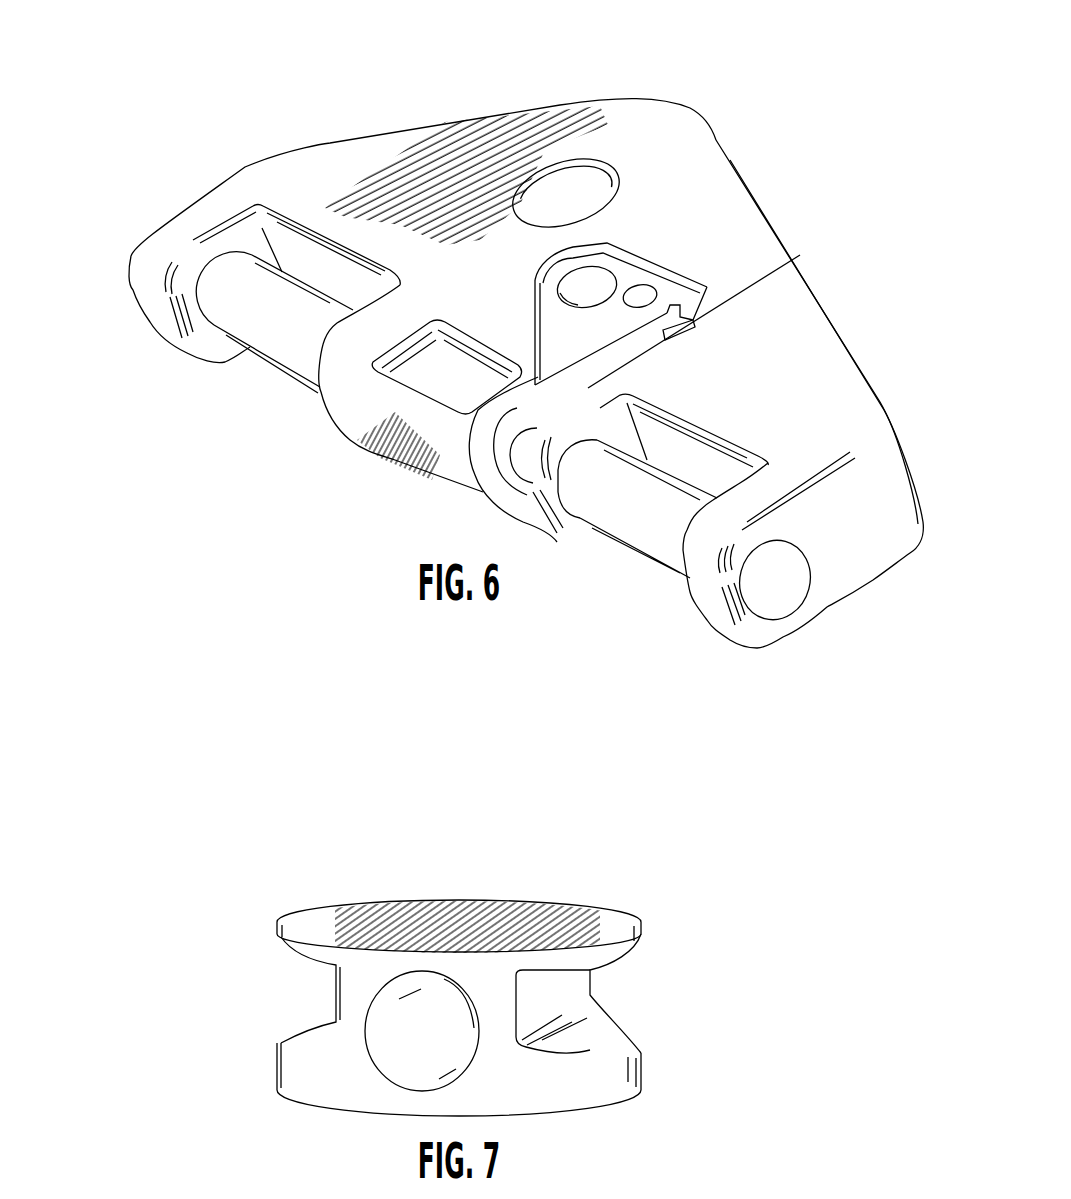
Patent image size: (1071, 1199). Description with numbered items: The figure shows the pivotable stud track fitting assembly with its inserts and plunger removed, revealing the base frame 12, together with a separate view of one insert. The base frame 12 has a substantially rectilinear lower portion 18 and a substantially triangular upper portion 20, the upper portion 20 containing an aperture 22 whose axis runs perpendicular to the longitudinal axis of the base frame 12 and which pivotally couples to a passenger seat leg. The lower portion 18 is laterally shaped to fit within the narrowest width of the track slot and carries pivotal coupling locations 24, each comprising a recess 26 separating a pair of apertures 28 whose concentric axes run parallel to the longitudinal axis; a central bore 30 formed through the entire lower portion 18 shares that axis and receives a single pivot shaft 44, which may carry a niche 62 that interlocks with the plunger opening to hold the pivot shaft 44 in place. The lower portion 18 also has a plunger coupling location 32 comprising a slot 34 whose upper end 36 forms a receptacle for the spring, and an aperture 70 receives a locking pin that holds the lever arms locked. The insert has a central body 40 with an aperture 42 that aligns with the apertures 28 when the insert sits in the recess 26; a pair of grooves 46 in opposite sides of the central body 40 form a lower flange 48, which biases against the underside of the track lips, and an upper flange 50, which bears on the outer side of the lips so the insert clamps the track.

In FIG. 6, the base frame 12 is at (350, 140).
In FIG. 7, the base frame 12 is at (325, 917).
In FIG. 6, the lower portion 18 is at (225, 190).
In FIG. 6, the upper portion 20 is at (765, 250).
In FIG. 6, the aperture 22 is at (577, 160).
In FIG. 6, the pivotal coupling location 24 is at (310, 247).
In FIG. 6, the recess 26 is at (335, 275).
In FIG. 6, the apertures 28 is at (205, 277).
In FIG. 6, the central bore 30 is at (497, 432).
In FIG. 6, the plunger coupling location 32 is at (677, 308).
In FIG. 6, the slot 34 is at (690, 318).
In FIG. 6, the upper end 36 is at (668, 320).
In FIG. 6, the pivot shaft 44 is at (297, 347).
In FIG. 6, the niche 62 is at (540, 432).
In FIG. 6, the aperture 70 is at (630, 292).
In FIG. 7, the central body 40 is at (340, 1070).
In FIG. 7, the aperture 42 is at (473, 1010).
In FIG. 7, the grooves 46 is at (334, 1003).
In FIG. 7, the lower flange 48 is at (285, 1045).
In FIG. 7, the upper flange 50 is at (278, 936).